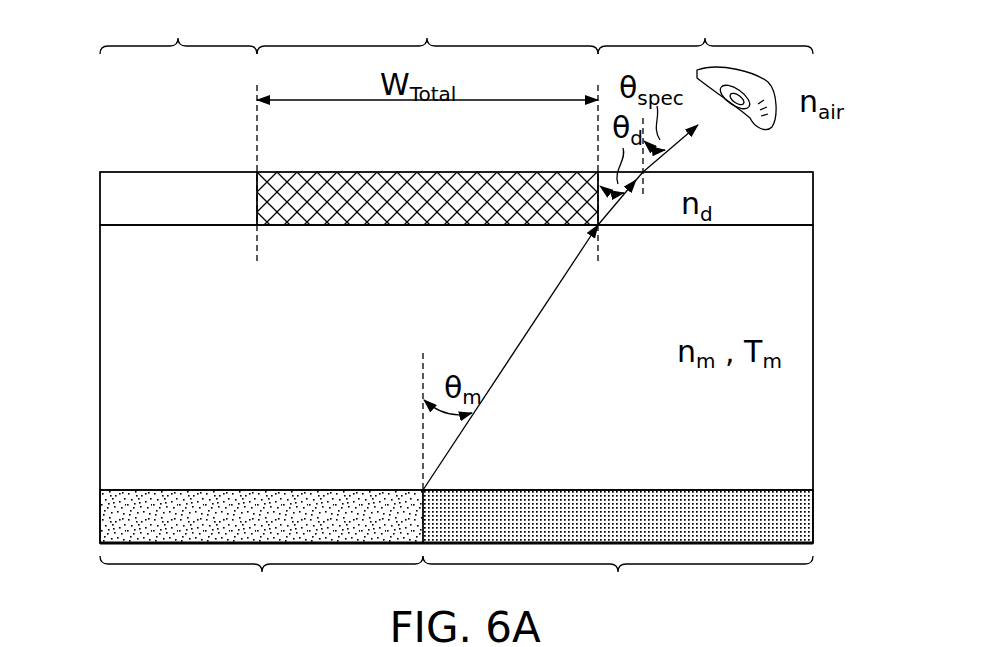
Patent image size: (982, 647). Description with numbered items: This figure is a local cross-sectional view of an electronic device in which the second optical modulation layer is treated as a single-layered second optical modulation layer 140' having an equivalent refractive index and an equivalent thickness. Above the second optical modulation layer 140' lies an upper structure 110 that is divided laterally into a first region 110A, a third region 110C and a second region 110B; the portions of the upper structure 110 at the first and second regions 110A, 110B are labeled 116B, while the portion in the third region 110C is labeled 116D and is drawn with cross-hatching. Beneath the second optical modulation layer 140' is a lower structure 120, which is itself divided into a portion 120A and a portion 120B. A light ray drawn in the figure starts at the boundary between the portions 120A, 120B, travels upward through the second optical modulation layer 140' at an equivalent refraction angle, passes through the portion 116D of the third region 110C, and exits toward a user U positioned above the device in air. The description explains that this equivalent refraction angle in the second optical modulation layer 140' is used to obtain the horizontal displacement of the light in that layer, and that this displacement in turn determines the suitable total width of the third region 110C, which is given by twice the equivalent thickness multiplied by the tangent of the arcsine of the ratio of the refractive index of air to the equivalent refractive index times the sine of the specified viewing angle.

The cover layer 110 is at (86, 200).
The first region of cover structure 110A is at (178, 28).
The second region of cover structure 110B is at (705, 28).
The third region 110C is at (427, 28).
The light transmitting portion 116B is at (170, 190).
The light diffusing portion 116D is at (426, 190).
The second optical modulation layer 140' is at (415, 357).
The bottom layer 120 is at (86, 517).
The light emitting region 120A is at (261, 549).
The light absorbing region 120B is at (618, 549).
The user U is at (788, 125).